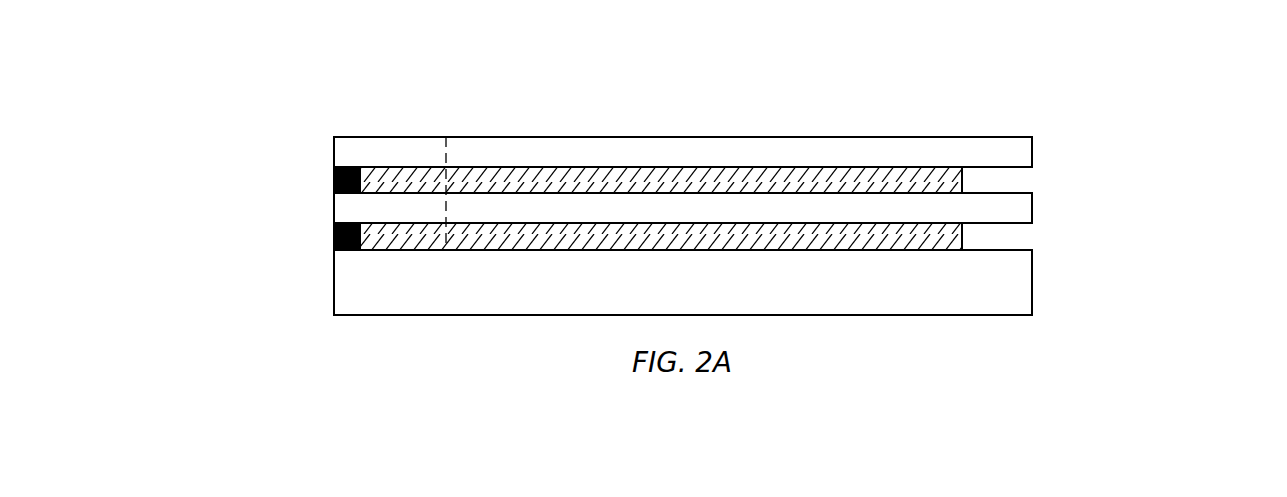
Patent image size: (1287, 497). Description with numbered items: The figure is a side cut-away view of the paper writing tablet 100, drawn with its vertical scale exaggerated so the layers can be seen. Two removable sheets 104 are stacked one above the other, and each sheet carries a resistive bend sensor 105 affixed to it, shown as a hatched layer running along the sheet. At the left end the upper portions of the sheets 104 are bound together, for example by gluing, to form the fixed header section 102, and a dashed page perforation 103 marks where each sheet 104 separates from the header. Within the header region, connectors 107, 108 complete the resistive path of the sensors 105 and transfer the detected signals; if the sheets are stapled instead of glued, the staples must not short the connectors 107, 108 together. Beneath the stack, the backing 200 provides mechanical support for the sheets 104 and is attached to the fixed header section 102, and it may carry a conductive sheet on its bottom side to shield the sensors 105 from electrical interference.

The paper writing tablet 100 is at (701, 105).
The fixed header section 102 is at (368, 137).
The page perforation 103 is at (448, 137).
The removable sheets 104 is at (1032, 153).
The resistive bend sensors 105 is at (962, 183).
The connector 107 is at (266, 211).
The connector 108 is at (333, 180).
The backing 200 is at (332, 282).